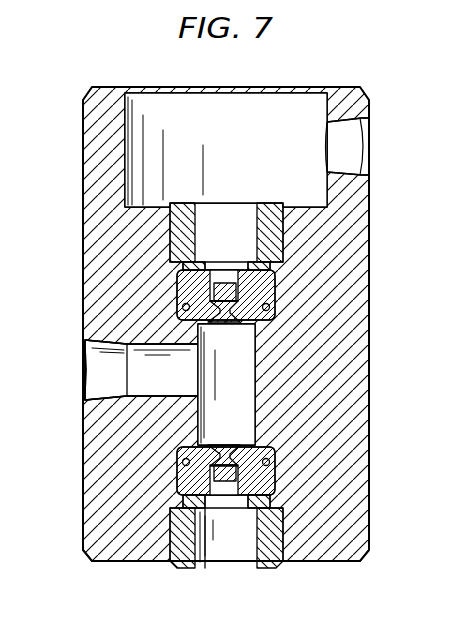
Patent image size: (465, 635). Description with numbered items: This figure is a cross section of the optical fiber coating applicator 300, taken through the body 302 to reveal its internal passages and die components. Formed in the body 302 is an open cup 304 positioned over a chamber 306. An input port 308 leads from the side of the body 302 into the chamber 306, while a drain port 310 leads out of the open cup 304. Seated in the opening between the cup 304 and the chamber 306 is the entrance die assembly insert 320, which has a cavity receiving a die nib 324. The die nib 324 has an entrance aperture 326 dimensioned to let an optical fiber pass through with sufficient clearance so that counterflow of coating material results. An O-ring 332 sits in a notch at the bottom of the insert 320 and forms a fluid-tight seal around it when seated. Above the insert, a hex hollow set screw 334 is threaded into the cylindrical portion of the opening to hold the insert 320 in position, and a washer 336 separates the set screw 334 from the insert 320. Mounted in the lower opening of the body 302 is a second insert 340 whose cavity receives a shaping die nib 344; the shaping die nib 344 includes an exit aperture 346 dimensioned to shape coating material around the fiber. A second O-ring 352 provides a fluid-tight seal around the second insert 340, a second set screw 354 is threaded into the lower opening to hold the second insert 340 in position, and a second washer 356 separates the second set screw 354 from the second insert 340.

The applicator 300 is at (334, 60).
The body 302 is at (83, 292).
The open cup 304 is at (239, 136).
The chamber 306 is at (239, 431).
The input port 308 is at (74, 374).
The drain port 310 is at (383, 147).
The entrance die assembly insert 320 is at (276, 290).
The die nib 324 is at (240, 297).
The entrance aperture 326 is at (222, 279).
The O-ring 332 is at (268, 313).
The hex hollow set screw 334 is at (287, 216).
The washer 336 is at (272, 263).
The second insert 340 is at (276, 482).
The shaping die nib 344 is at (240, 478).
The exit aperture 346 is at (222, 498).
The second O-ring 352 is at (266, 456).
The second set screw 354 is at (279, 566).
The second washer 356 is at (280, 504).